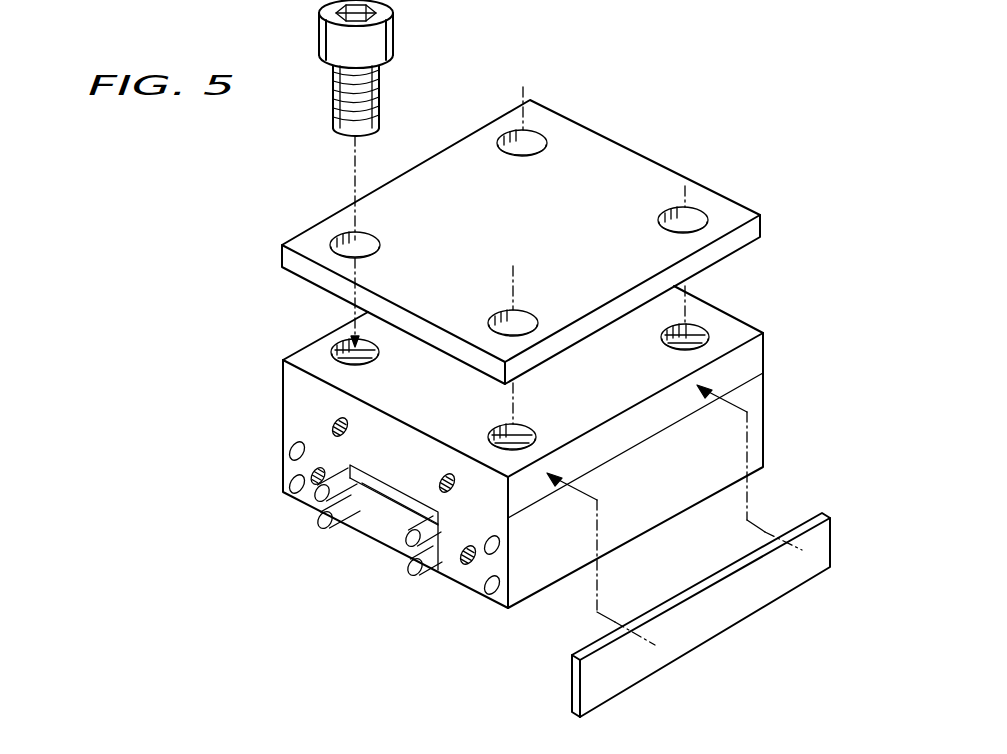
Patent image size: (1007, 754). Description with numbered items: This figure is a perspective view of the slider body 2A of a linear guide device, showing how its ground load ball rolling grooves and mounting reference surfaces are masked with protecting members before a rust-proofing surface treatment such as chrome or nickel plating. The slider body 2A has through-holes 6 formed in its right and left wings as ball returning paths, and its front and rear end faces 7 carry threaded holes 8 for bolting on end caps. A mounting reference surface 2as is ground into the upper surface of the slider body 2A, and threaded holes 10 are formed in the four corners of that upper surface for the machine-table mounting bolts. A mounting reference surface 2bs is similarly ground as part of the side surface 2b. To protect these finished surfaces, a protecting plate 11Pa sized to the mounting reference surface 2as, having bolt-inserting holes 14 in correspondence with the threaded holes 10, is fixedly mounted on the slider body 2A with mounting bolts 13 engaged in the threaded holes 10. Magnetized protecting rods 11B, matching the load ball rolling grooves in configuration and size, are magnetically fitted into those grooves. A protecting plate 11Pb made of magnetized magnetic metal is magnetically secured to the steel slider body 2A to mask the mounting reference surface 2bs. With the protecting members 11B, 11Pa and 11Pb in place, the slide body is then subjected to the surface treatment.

The mounting bolt 13 is at (338, 43).
The protecting plate 11Pa is at (500, 240).
The bolt-inserting hole 14 is at (336, 240).
The mounting reference surface 2as is at (712, 325).
The slider body 2A is at (556, 450).
The threaded hole 10 is at (338, 346).
The mounting reference surface 2bs is at (748, 357).
The end face 7 is at (295, 395).
The through-hole 6 is at (289, 484).
The side surface 2b is at (748, 452).
The protecting rod 11B is at (319, 528).
The threaded hole 8 is at (465, 567).
The protecting plate 11Pb is at (767, 588).